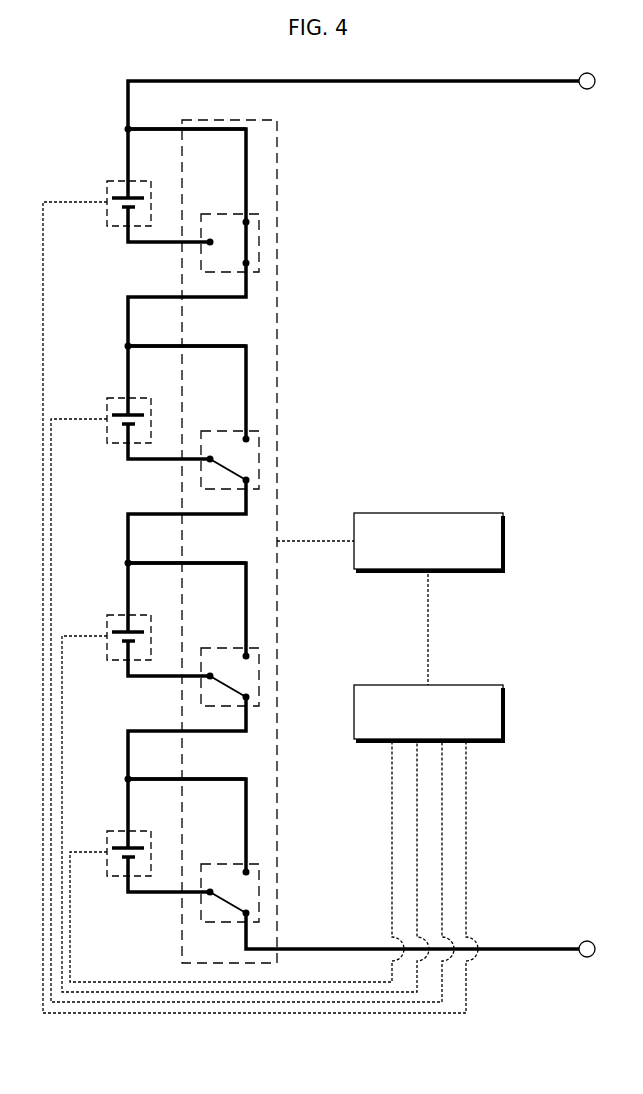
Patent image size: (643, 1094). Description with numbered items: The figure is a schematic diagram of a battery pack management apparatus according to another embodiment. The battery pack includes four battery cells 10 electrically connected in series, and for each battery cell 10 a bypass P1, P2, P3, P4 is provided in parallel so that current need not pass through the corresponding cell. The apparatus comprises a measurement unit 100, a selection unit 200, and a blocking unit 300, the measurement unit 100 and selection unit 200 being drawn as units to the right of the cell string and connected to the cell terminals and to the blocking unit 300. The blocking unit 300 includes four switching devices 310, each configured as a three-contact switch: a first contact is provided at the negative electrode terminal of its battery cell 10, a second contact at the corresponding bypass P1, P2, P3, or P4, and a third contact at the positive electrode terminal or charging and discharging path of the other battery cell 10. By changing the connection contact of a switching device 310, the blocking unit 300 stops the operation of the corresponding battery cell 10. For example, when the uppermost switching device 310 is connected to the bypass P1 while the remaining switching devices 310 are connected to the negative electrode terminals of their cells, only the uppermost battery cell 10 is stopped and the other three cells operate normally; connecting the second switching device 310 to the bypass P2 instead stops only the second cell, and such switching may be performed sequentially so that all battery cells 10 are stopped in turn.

The battery cell 10 is at (112, 181).
The measurement unit 100 is at (481, 685).
The selection unit 200 is at (481, 513).
The blocking unit 300 is at (278, 158).
The switching device 310 is at (210, 214).
The bypass P1 is at (165, 129).
The bypass P2 is at (165, 346).
The bypass P3 is at (165, 563).
The bypass P4 is at (165, 779).